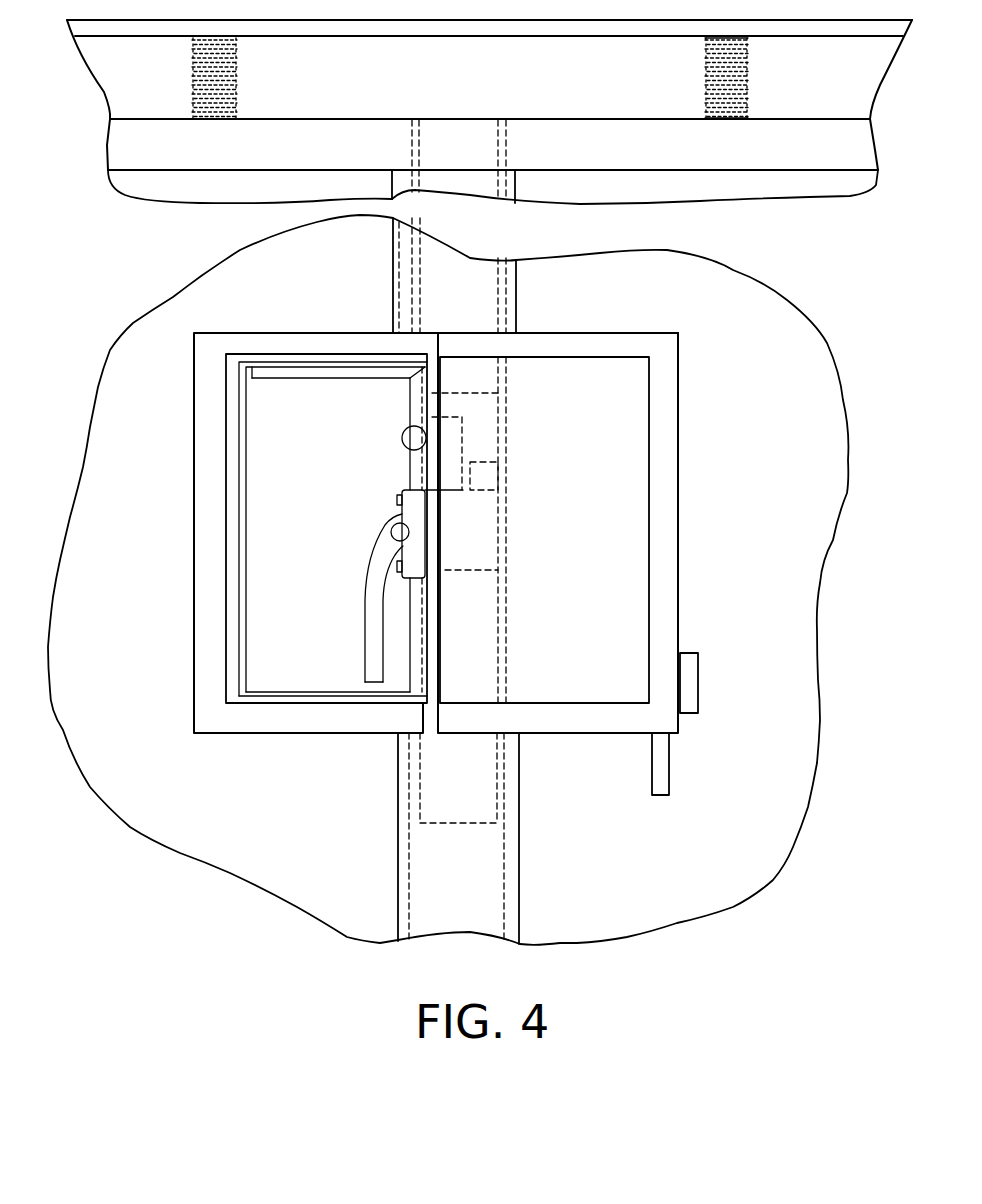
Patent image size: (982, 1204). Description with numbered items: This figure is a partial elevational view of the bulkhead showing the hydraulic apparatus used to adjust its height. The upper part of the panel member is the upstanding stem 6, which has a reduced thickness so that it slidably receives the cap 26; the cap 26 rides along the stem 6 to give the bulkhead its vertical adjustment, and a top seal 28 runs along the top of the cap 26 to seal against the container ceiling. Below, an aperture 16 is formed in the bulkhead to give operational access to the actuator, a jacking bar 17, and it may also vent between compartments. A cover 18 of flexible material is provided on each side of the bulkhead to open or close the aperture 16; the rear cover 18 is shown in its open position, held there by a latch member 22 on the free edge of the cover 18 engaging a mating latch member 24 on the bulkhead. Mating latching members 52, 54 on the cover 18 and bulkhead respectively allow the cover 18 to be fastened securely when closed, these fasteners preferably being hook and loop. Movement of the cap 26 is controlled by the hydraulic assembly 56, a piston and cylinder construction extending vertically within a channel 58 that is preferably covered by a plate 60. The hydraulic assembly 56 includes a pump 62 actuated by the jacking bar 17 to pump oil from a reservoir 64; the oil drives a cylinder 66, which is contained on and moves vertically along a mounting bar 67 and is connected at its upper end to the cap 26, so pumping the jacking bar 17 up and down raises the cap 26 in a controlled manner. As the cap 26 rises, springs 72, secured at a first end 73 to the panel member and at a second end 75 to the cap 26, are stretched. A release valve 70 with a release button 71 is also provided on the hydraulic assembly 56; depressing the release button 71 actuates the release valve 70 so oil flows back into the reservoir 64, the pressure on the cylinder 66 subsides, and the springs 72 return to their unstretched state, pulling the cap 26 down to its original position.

The stem 6 is at (306, 162).
The aperture 16 is at (420, 407).
The jacking bar 17 is at (358, 546).
The cover 18 is at (300, 638).
The latch member 22 is at (660, 768).
The mating latch member 24 is at (688, 681).
The cap 26 is at (436, 90).
The top seal 28 is at (603, 30).
The latching member 52 is at (578, 725).
The latching member 54 is at (289, 725).
The hydraulic assembly 56 is at (541, 450).
The channel 58 is at (405, 298).
The plate 60 is at (490, 903).
The pump 62 is at (490, 475).
The reservoir 64 is at (474, 805).
The cylinder 66 is at (476, 312).
The mounting bar 67 is at (494, 420).
The release valve 70 is at (420, 480).
The release button 71 is at (402, 438).
The springs 72 is at (705, 76).
The first end 73 is at (748, 40).
The second end 75 is at (748, 118).